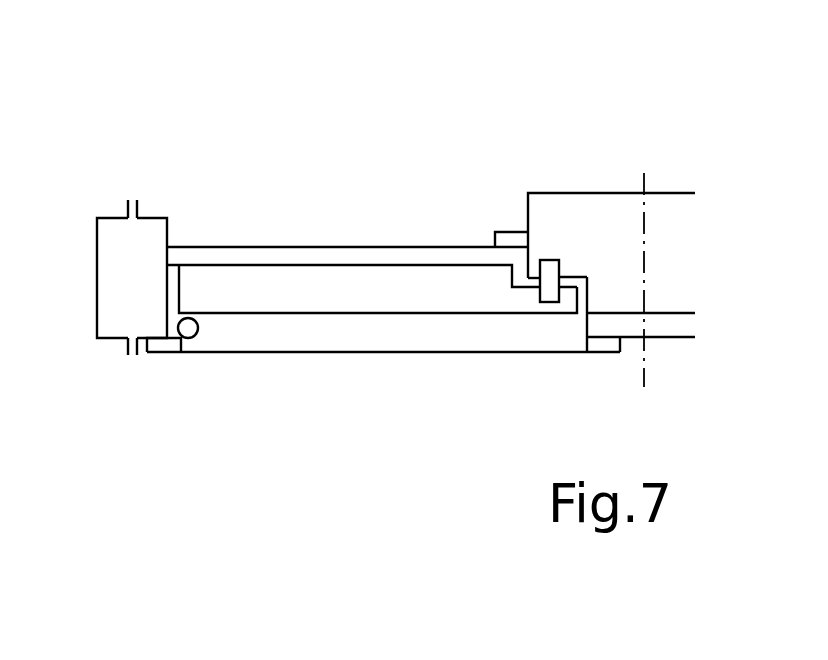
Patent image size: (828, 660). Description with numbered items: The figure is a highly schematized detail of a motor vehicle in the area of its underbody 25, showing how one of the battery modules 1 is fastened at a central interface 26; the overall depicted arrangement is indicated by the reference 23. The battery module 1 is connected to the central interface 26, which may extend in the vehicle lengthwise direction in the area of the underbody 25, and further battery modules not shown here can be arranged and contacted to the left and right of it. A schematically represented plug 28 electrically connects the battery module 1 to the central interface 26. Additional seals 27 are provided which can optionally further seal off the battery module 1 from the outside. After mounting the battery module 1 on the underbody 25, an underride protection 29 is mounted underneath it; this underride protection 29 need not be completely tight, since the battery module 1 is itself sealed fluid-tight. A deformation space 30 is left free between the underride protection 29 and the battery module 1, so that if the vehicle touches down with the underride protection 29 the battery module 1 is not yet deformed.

The drive unit assembly 23 is at (308, 128).
The underbody 25 is at (296, 237).
The battery module 1 is at (382, 301).
The central interface 26 is at (693, 267).
The seal 27 is at (507, 235).
The plug 28 is at (550, 297).
The underride protection 29 is at (285, 355).
The deformation space 30 is at (380, 336).